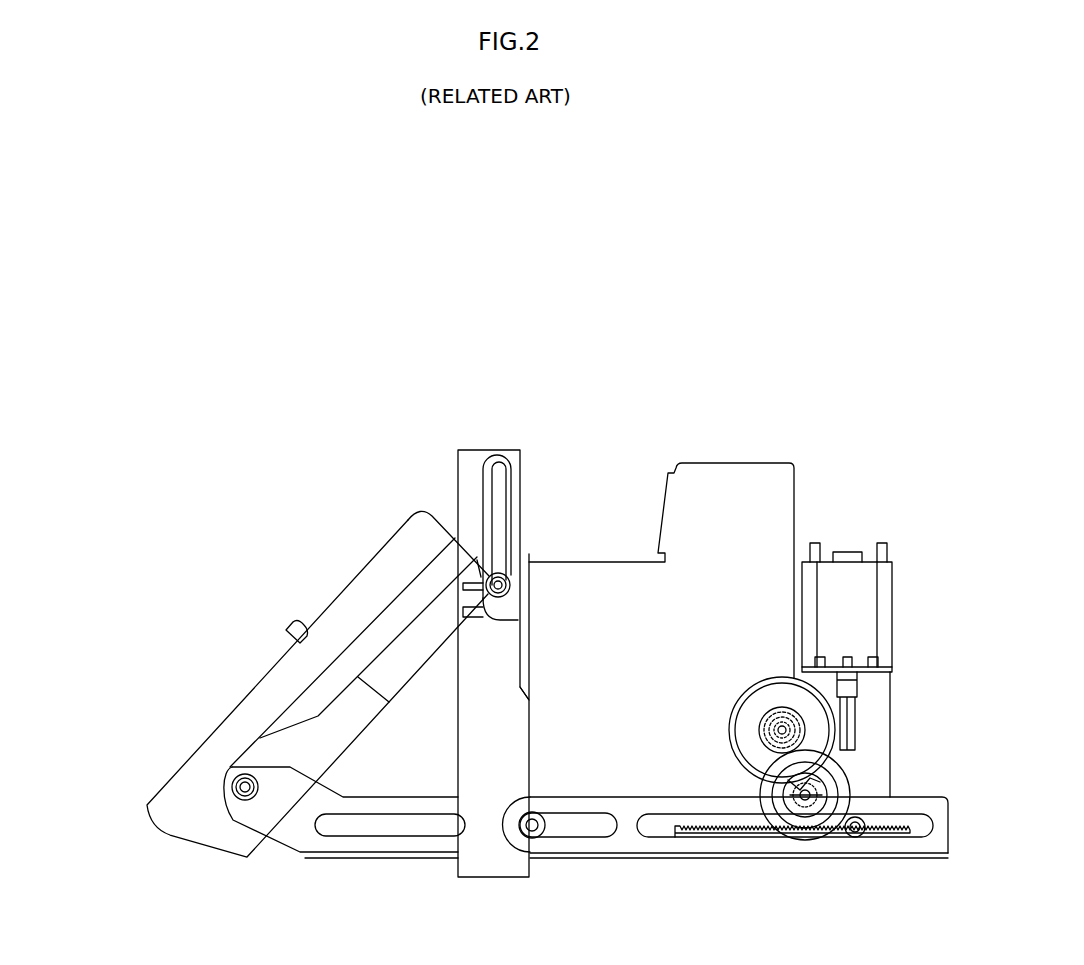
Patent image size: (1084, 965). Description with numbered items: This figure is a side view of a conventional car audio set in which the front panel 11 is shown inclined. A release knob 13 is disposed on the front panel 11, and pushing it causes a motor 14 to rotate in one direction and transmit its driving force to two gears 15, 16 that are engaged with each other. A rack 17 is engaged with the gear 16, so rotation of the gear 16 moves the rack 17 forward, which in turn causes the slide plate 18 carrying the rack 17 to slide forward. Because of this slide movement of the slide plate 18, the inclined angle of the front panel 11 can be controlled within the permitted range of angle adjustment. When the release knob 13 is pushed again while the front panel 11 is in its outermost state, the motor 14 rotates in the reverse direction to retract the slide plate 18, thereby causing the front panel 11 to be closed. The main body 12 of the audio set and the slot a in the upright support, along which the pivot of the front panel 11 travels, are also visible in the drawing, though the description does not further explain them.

The front panel 11 is at (220, 688).
The main body 12 is at (811, 470).
The release knob 13 is at (285, 630).
The motor 14 is at (862, 615).
The gear 15 is at (820, 737).
The gear 16 is at (843, 785).
The rack 17 is at (903, 833).
The slide plate 18 is at (667, 845).
The guide slot a is at (502, 522).